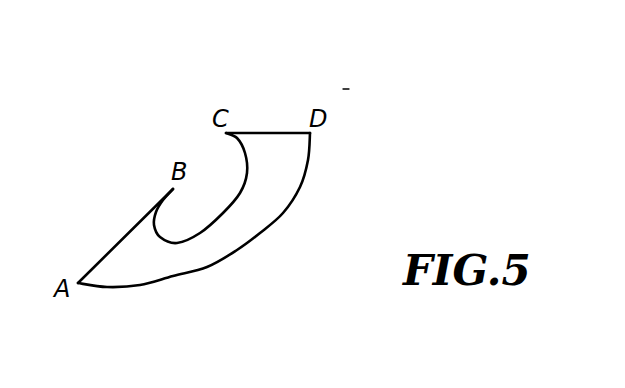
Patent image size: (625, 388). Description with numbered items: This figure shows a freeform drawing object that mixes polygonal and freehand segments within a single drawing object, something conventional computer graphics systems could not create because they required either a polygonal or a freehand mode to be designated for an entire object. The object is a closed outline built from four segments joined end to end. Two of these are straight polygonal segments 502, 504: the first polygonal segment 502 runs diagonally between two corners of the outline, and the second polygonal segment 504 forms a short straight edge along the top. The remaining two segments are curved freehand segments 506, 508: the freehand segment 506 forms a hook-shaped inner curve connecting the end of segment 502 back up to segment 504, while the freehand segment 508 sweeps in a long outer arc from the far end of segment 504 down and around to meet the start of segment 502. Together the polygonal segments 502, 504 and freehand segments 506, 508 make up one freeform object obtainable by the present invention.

The polygonal segment 502 is at (106, 257).
The polygonal segment 504 is at (268, 132).
The freehand segment 506 is at (232, 143).
The freehand segment 508 is at (247, 246).